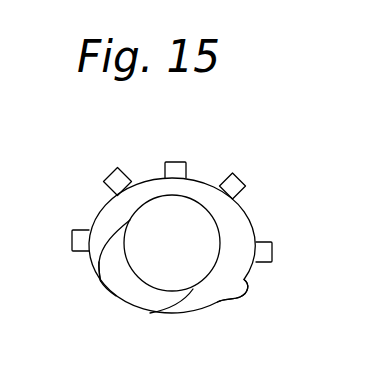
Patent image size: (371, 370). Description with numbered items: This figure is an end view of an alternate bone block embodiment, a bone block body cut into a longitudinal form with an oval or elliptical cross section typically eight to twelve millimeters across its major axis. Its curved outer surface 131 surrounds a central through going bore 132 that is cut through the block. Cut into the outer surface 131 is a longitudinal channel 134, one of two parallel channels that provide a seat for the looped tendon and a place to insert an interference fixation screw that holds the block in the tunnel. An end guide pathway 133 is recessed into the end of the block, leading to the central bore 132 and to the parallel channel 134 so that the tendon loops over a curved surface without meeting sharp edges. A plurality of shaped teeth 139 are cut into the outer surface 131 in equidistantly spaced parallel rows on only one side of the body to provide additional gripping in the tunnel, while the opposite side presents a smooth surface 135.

The curved outer surface 131 is at (252, 222).
The central through going bore 132 is at (192, 258).
The end guide pathway 133 is at (143, 298).
The longitudinal channel 134 is at (101, 281).
The smooth surface 135 is at (207, 310).
The shaped teeth 139 is at (242, 187).